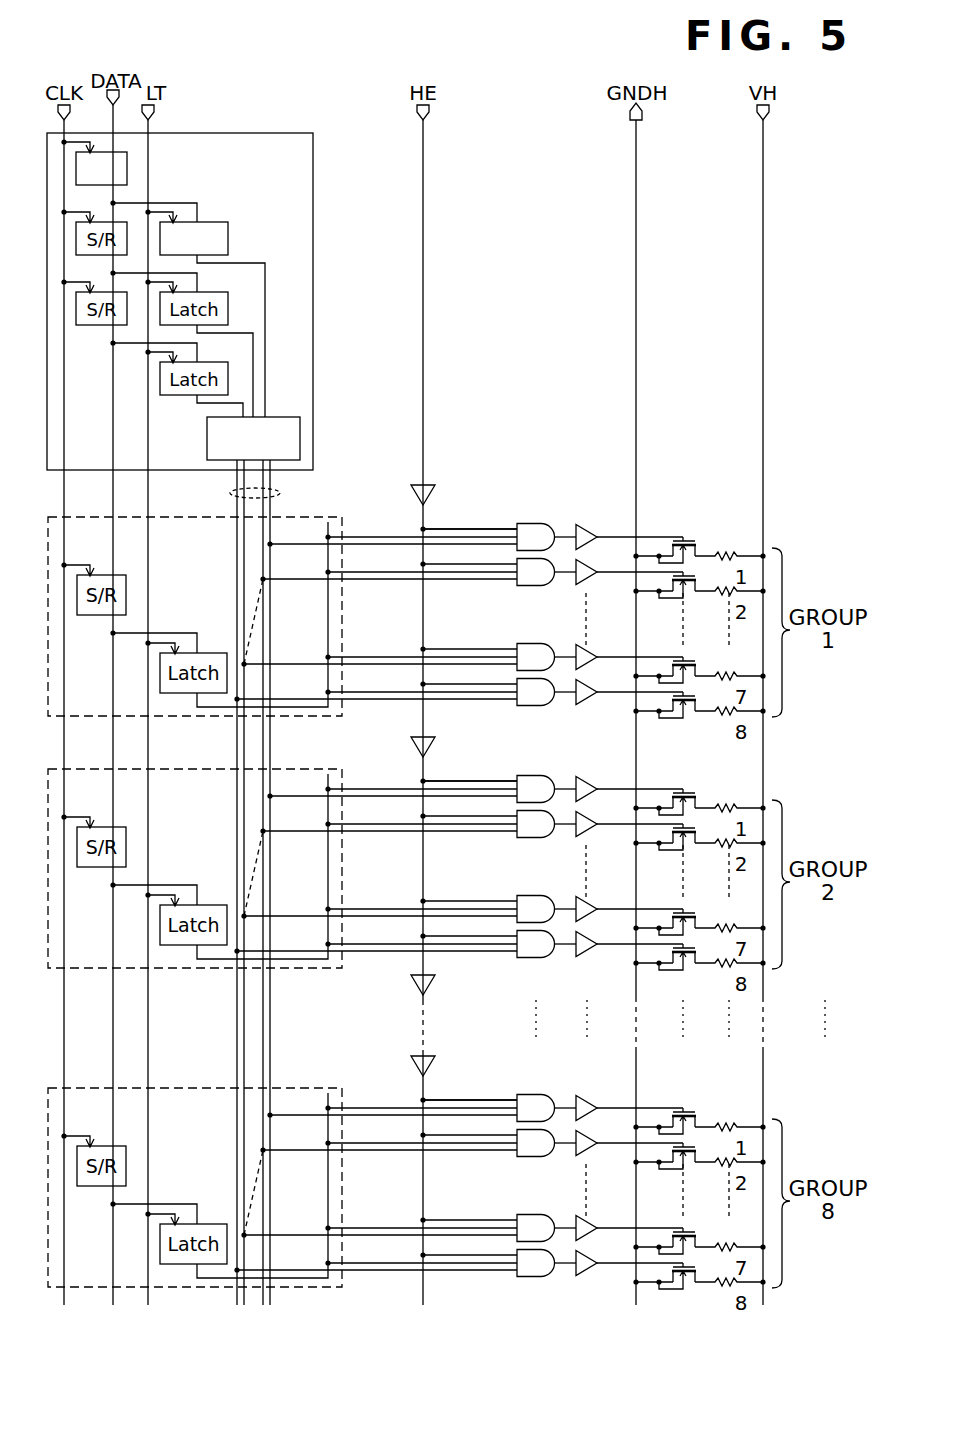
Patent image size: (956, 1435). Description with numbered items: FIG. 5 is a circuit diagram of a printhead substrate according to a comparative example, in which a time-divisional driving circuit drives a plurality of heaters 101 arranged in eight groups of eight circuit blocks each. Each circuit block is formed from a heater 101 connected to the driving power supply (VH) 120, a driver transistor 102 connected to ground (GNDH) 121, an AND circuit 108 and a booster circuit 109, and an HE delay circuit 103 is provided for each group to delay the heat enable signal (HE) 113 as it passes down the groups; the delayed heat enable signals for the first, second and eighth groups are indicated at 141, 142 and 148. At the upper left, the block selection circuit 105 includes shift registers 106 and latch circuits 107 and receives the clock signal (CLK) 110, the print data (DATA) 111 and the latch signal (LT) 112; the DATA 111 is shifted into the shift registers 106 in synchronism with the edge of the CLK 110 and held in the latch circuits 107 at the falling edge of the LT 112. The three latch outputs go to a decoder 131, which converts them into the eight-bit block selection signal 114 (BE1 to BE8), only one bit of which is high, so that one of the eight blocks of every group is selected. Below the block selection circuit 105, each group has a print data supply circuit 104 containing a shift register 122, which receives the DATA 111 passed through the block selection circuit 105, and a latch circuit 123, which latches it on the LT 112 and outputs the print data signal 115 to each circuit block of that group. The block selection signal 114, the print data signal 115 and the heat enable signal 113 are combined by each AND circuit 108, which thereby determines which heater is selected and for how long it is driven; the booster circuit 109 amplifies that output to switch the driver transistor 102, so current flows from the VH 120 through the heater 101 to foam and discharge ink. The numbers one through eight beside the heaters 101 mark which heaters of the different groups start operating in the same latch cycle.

The heater 101 is at (728, 550).
The driver transistor 102 is at (683, 540).
The HE delay circuit 103 is at (423, 482).
The print data supply circuit 104 is at (295, 716).
The block selection circuit 105 is at (288, 133).
The shift register 106 is at (127, 177).
The latch circuit 107 is at (228, 240).
The AND circuit 108 is at (535, 523).
The booster circuit 109 is at (588, 525).
The clock signal (CLK) 110 is at (63, 77).
The print data (DATA) 111 is at (117, 66).
The latch signal (LT) 112 is at (152, 78).
The heat enable signal (HE) 113 is at (437, 108).
The block selection signal 114 is at (282, 492).
The print data signal 115 is at (328, 625).
The driving power supply (VH) 120 is at (757, 110).
The ground (GNDH) 121 is at (630, 115).
The shift register 122 is at (95, 615).
The latch circuit 123 is at (210, 653).
The decoder 131 is at (300, 420).
The heat enable buffer group 1 141 is at (423, 622).
The heat enable buffer group 2 142 is at (423, 874).
The heat enable buffer group 8 148 is at (423, 1194).